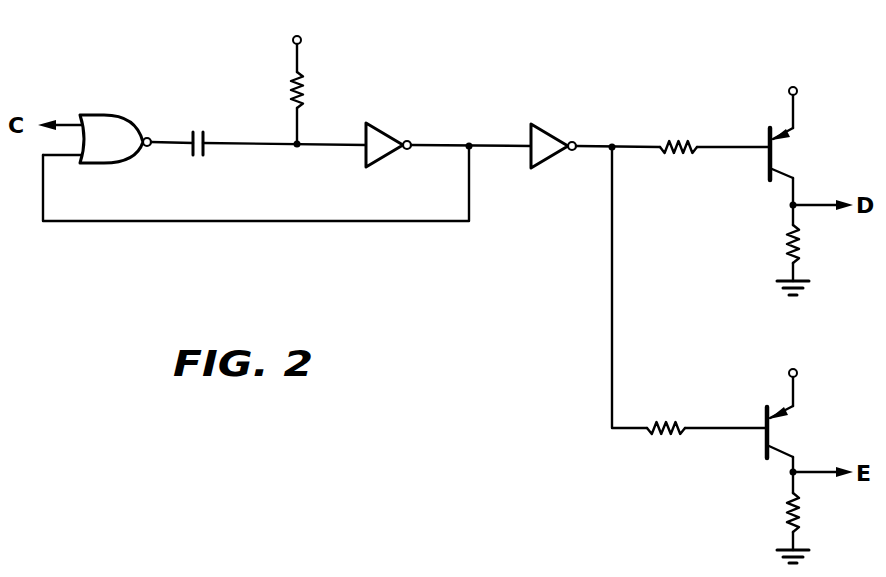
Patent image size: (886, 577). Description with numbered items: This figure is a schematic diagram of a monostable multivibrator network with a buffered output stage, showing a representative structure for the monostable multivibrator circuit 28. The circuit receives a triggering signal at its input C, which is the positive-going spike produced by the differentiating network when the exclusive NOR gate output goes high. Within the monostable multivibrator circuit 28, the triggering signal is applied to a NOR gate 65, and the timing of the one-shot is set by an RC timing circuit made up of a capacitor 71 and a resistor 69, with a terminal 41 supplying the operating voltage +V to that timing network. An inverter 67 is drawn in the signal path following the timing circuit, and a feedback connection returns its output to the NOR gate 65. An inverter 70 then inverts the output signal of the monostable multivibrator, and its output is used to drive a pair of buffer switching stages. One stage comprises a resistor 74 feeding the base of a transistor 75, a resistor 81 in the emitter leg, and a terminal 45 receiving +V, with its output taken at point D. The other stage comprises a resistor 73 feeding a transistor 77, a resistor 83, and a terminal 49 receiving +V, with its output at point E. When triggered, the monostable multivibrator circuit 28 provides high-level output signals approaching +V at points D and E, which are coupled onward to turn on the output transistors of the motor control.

The monostable multivibrator circuit 28 is at (265, 264).
The terminal 41 is at (302, 41).
The terminal 45 is at (797, 92).
The terminal 49 is at (797, 374).
The NOR gate 65 is at (118, 163).
The inverter 67 is at (385, 158).
The resistor 69 is at (304, 88).
The inverter 70 is at (550, 159).
The capacitor 71 is at (207, 127).
The resistor 73 is at (659, 421).
The resistor 74 is at (673, 128).
The transistor 75 is at (781, 158).
The transistor 77 is at (779, 432).
The resistor 81 is at (800, 252).
The resistor 83 is at (800, 514).